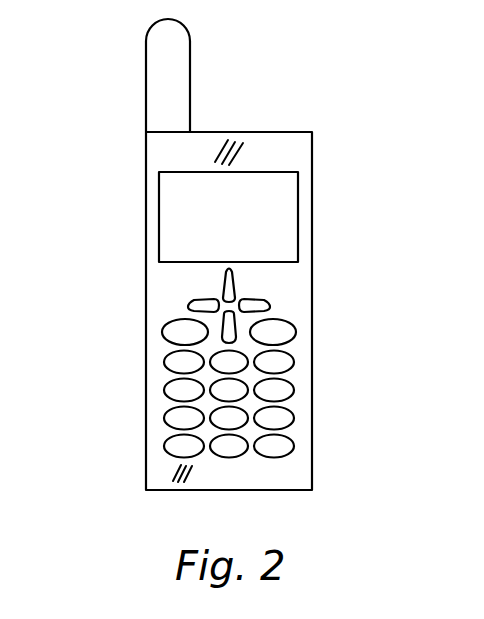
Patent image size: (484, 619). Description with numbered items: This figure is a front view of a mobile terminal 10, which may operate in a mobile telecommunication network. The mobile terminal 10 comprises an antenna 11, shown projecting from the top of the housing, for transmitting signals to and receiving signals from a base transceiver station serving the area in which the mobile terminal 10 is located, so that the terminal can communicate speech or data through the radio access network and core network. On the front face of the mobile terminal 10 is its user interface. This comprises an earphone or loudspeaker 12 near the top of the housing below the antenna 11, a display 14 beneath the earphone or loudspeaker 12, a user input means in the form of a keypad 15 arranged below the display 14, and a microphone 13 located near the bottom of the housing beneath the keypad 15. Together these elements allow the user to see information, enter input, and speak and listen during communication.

The mobile terminal 10 is at (309, 97).
The antenna 11 is at (165, 87).
The earphone or loudspeaker 12 is at (229, 142).
The microphone 13 is at (173, 471).
The display 14 is at (173, 217).
The keypad 15 is at (183, 363).